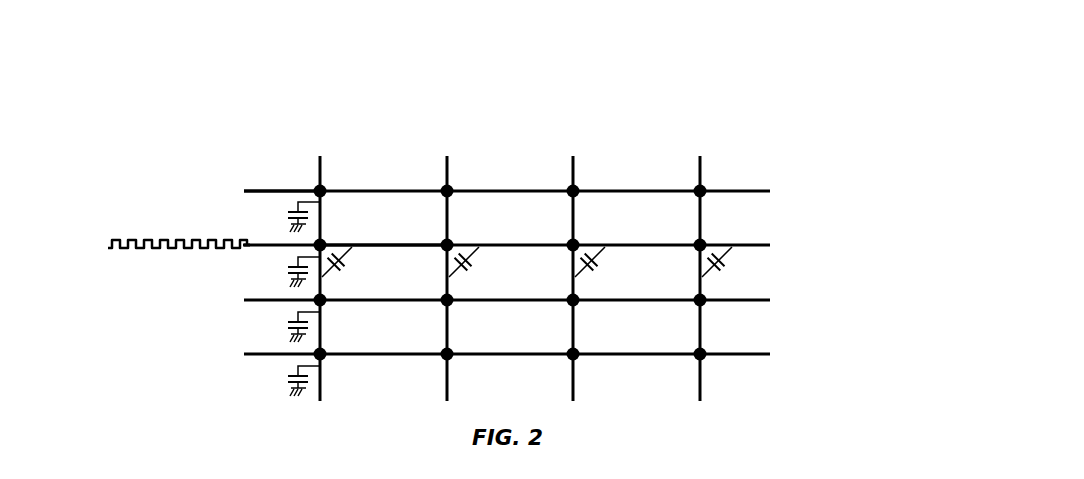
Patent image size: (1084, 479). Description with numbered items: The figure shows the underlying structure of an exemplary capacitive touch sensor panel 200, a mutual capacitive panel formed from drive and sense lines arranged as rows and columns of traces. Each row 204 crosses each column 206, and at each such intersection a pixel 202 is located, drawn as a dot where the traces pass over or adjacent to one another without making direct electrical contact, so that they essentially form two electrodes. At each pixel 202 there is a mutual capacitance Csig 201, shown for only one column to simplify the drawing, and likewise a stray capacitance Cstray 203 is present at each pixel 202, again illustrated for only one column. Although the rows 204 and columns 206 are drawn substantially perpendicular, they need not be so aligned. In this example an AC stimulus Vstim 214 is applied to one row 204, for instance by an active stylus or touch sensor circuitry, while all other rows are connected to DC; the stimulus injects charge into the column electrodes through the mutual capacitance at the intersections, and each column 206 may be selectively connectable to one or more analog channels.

The capacitive touch sensor panel 200 is at (762, 97).
The mutual capacitance Csig 201 is at (372, 245).
The pixel 202 is at (706, 198).
The stray capacitance Cstray 203 is at (270, 200).
The row 204 is at (753, 248).
The column 206 is at (703, 317).
The AC stimulus Vstim 214 is at (147, 228).